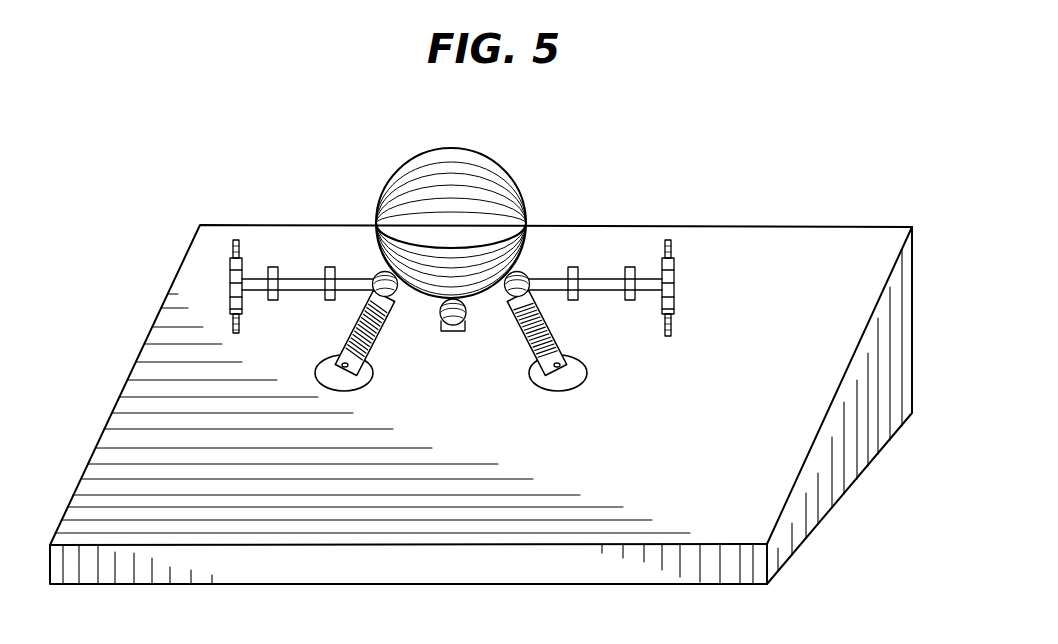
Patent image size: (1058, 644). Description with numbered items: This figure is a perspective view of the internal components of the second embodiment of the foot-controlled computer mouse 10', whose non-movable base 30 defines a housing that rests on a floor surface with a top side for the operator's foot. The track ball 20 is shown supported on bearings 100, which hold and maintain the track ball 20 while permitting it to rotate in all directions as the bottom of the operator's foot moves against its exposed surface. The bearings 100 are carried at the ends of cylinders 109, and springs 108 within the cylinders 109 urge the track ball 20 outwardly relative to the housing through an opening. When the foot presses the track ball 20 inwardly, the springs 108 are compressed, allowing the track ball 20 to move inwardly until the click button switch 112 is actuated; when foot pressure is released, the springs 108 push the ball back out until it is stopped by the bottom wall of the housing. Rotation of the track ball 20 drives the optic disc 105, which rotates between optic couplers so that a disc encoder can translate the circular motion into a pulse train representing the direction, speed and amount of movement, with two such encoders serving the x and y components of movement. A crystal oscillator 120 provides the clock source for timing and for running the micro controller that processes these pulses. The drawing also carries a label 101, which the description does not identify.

The foot-controlled computer mouse 10' is at (786, 149).
The track ball 20 is at (400, 168).
The non-movable base 30 is at (805, 505).
The bearings 100 is at (372, 283).
The spring arm 101 is at (390, 305).
The optic disc 105 is at (233, 248).
The springs 108 is at (541, 317).
The cylinders 109 is at (370, 338).
The click button switch 112 is at (515, 316).
The crystal oscillator 120 is at (293, 285).